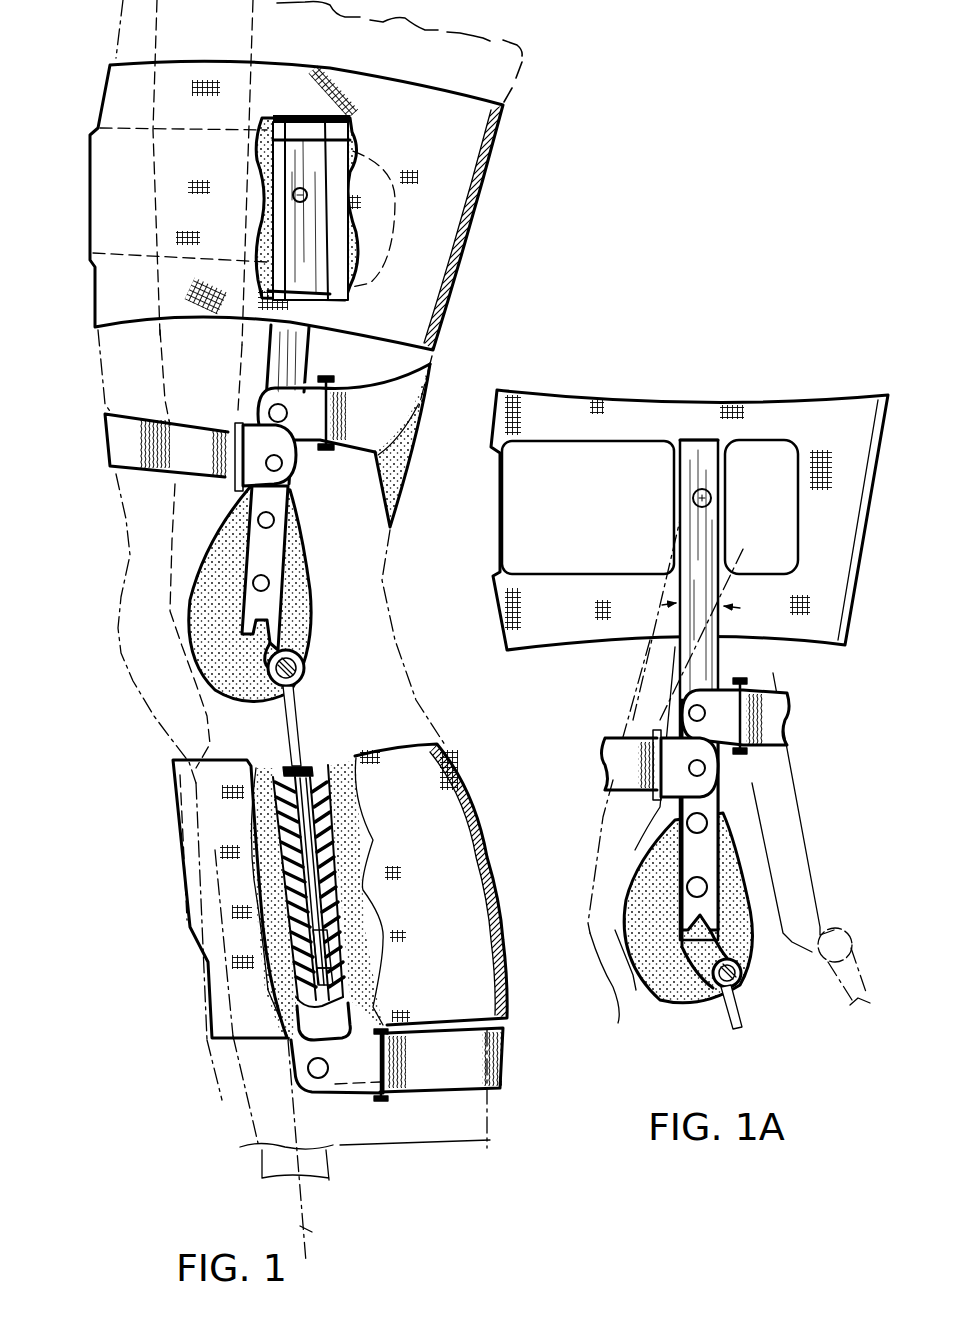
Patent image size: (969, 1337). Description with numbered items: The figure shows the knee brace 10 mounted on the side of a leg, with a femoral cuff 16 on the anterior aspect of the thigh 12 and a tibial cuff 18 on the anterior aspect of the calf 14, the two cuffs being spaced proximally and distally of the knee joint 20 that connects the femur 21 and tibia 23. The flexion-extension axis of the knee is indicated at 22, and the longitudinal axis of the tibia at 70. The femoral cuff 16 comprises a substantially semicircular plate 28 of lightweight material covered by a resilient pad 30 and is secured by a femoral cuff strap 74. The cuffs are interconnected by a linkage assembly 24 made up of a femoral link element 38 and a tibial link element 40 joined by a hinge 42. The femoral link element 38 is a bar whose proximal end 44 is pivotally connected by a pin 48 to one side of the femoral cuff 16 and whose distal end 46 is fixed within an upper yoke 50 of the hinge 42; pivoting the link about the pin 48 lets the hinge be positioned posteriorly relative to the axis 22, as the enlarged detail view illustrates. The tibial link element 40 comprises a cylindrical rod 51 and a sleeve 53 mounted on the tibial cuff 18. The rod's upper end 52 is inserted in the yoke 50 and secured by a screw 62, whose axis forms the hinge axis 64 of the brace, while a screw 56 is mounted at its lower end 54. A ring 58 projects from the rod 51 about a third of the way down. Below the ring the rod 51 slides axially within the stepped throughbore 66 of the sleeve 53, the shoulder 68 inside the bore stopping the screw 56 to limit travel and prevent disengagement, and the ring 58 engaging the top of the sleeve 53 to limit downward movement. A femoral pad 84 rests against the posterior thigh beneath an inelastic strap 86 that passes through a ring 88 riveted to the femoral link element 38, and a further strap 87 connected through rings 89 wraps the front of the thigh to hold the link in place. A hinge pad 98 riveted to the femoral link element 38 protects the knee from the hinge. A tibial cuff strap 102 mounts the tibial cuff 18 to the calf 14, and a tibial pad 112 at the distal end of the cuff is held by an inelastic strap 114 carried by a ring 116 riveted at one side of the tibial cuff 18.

In FIG. 1, the knee brace 10 is at (84, 569).
In FIG. 1, the thigh 12 is at (120, 24).
In FIG. 1, the calf 14 is at (230, 1141).
In FIG. 1, the femoral cuff 16 is at (90, 208).
In FIG. 1A, the femoral cuff 16 is at (597, 472).
In FIG. 1, the tibial cuff 18 is at (220, 955).
In FIG. 1, the knee joint 20 is at (122, 685).
In FIG. 1, the femur 21 is at (158, 352).
In FIG. 1, the flexion-extension axis 22 is at (246, 618).
In FIG. 1, the tibia 23 is at (205, 815).
In FIG. 1, the linkage assembly 24 is at (244, 549).
In FIG. 1A, the linkage assembly 24 is at (680, 828).
In FIG. 1, the semicircular-shaped plate 28 is at (340, 138).
In FIG. 1, the resilient pad 30 is at (338, 244).
In FIG. 1, the femoral link element 38 is at (266, 350).
In FIG. 1A, the femoral link element 38 is at (690, 614).
In FIG. 1, the tibial link element 40 is at (255, 749).
In FIG. 1, the hinge 42 is at (325, 656).
In FIG. 1A, the hinge 42 is at (724, 996).
In FIG. 1, the proximal end 44 is at (299, 134).
In FIG. 1A, the proximal end 44 is at (704, 452).
In FIG. 1, the distal end 46 is at (276, 613).
In FIG. 1A, the distal end 46 is at (718, 914).
In FIG. 1, the pin 48 is at (308, 197).
In FIG. 1A, the pin 48 is at (713, 499).
In FIG. 1, the upper yoke 50 is at (270, 654).
In FIG. 1A, the upper yoke 50 is at (700, 988).
In FIG. 1, the cylindrical rod 51 is at (304, 738).
In FIG. 1, the upper end 52 is at (282, 704).
In FIG. 1A, the upper end 52 is at (742, 1012).
In FIG. 1, the sleeve 53 is at (288, 878).
In FIG. 1, the lower end 54 is at (332, 962).
In FIG. 1, the screw 56 is at (307, 1038).
In FIG. 1, the ring 58 is at (311, 767).
In FIG. 1, the screw 62 is at (280, 688).
In FIG. 1A, the screw 62 is at (742, 969).
In FIG. 1, the hinge axis 64 is at (305, 668).
In FIG. 1, the stepped throughbore 66 is at (330, 950).
In FIG. 1, the shoulder 68 is at (335, 910).
In FIG. 1, the longitudinal axis 70 is at (315, 1233).
In FIG. 1, the femoral cuff strap 74 is at (110, 98).
In FIG. 1A, the femoral cuff strap 74 is at (516, 646).
In FIG. 1, the femoral pad 84 is at (400, 488).
In FIG. 1, the strap 86 is at (420, 408).
In FIG. 1A, the strap 86 is at (790, 706).
In FIG. 1, the strap 87 is at (108, 468).
In FIG. 1A, the strap 87 is at (606, 764).
In FIG. 1, the ring 88 is at (327, 376).
In FIG. 1A, the ring 88 is at (748, 682).
In FIG. 1, the ring 89 is at (238, 492).
In FIG. 1A, the ring 89 is at (650, 802).
In FIG. 1, the hinge pad 98 is at (208, 596).
In FIG. 1, the tibial cuff strap 102 is at (478, 816).
In FIG. 1, the tibial pad 112 is at (508, 1052).
In FIG. 1, the strap 114 is at (477, 1094).
In FIG. 1, the ring 116 is at (378, 1100).